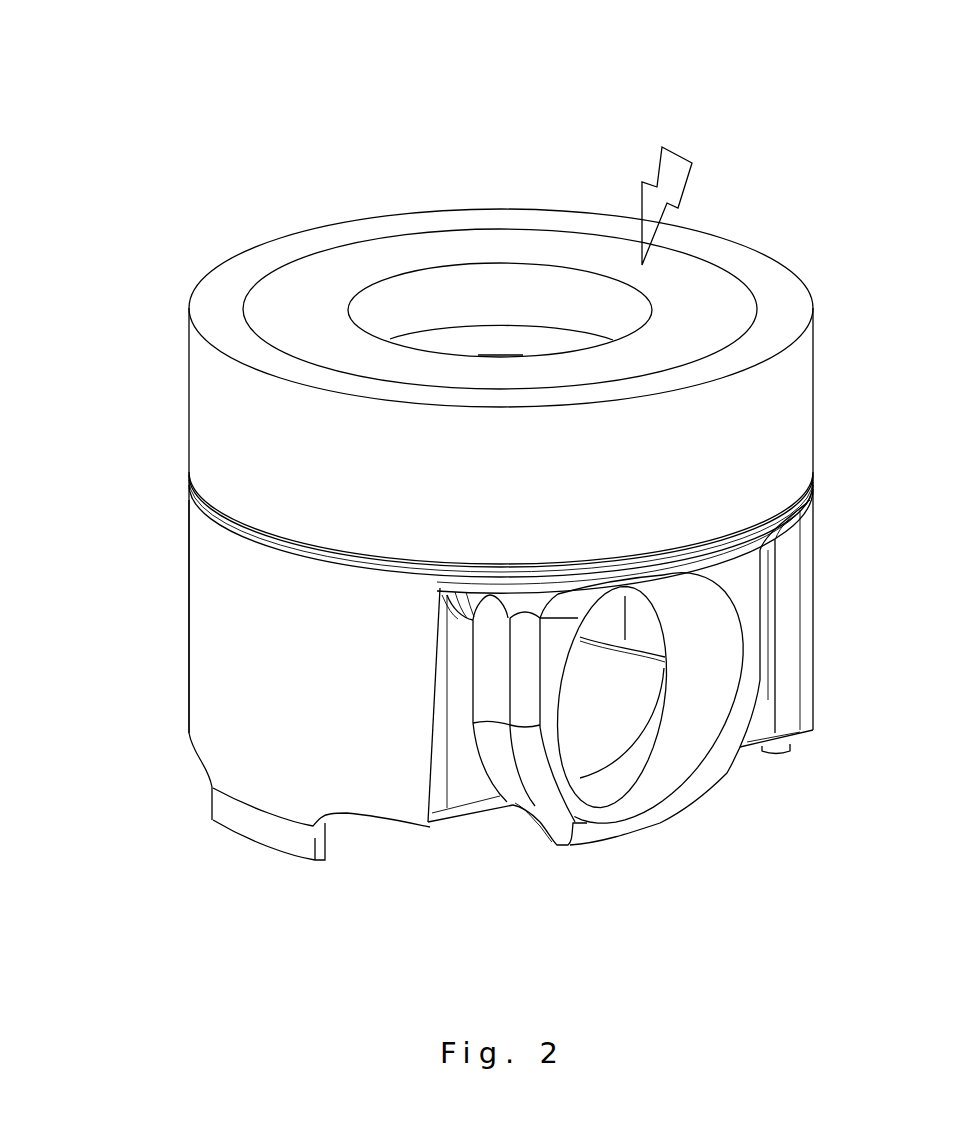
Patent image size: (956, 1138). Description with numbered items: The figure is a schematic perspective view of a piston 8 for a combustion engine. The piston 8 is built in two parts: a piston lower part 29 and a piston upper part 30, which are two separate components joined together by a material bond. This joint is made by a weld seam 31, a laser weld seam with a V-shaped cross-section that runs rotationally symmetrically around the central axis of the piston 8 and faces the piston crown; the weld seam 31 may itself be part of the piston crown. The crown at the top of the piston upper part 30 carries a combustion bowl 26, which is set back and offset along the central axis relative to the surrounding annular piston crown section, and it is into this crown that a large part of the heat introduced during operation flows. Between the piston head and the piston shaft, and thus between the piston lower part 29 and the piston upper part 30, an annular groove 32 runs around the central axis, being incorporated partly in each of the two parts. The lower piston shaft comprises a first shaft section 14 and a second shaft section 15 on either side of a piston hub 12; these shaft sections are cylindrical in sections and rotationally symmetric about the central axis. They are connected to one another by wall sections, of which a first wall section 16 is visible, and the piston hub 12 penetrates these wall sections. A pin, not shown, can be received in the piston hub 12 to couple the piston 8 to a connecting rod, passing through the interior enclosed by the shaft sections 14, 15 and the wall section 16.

The piston 8 is at (506, 87).
The piston upper part 30 is at (265, 244).
The weld seam 31 is at (737, 273).
The combustion bowl 26 is at (497, 325).
The groove 32 is at (213, 521).
The piston lower part 29 is at (180, 694).
The first shaft section 14 is at (257, 846).
The first wall section 16 is at (455, 817).
The piston hub 12 is at (647, 800).
The second shaft section 15 is at (781, 753).